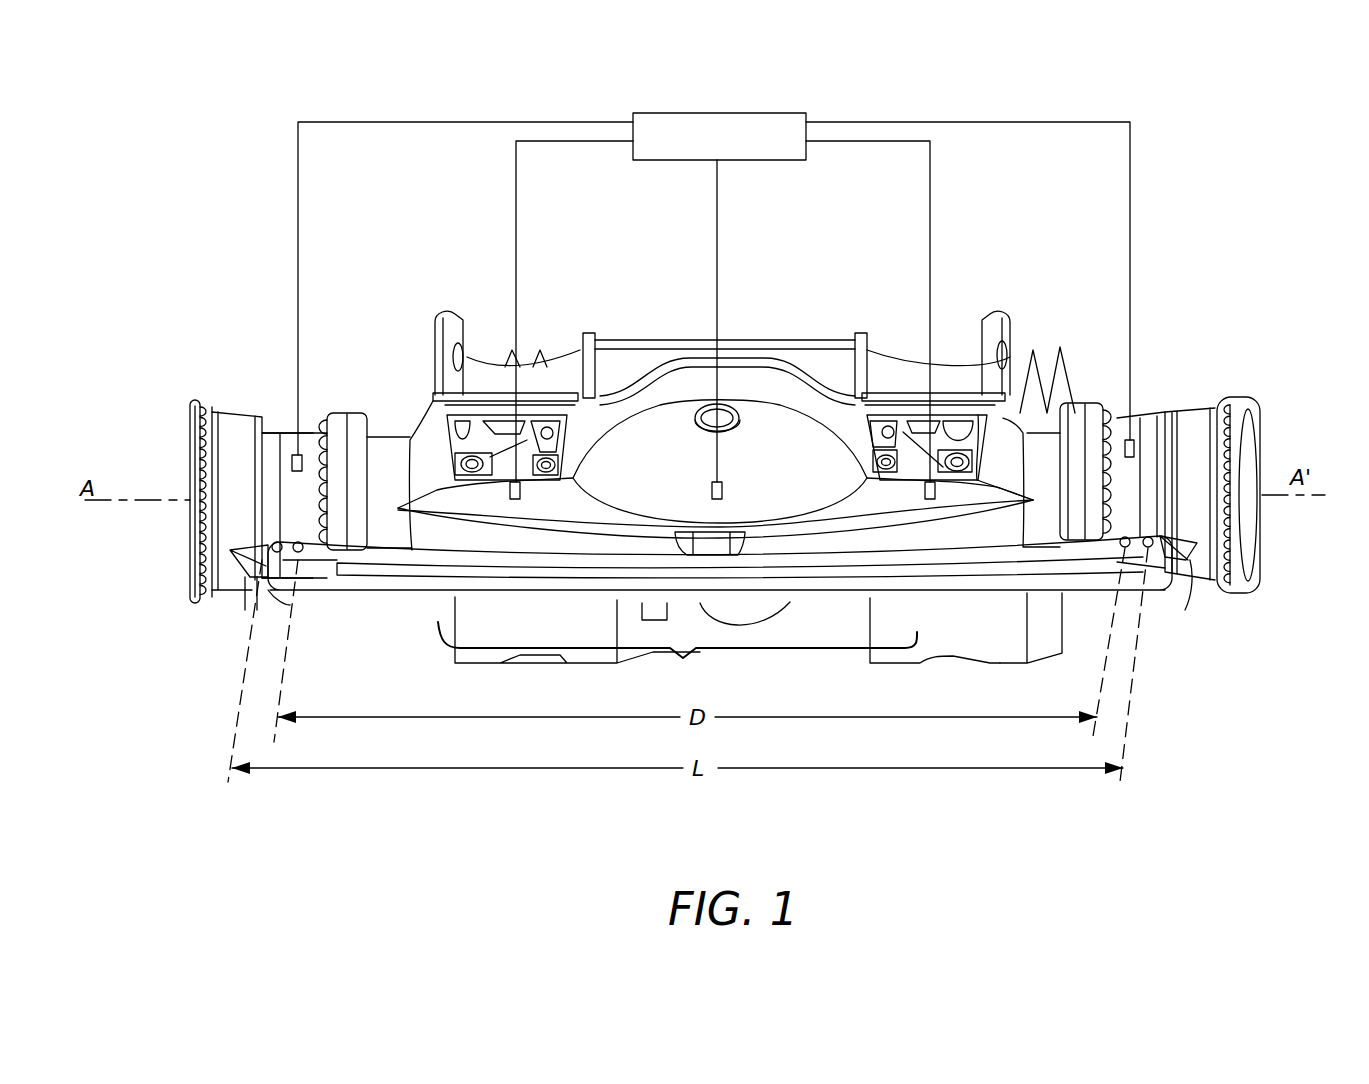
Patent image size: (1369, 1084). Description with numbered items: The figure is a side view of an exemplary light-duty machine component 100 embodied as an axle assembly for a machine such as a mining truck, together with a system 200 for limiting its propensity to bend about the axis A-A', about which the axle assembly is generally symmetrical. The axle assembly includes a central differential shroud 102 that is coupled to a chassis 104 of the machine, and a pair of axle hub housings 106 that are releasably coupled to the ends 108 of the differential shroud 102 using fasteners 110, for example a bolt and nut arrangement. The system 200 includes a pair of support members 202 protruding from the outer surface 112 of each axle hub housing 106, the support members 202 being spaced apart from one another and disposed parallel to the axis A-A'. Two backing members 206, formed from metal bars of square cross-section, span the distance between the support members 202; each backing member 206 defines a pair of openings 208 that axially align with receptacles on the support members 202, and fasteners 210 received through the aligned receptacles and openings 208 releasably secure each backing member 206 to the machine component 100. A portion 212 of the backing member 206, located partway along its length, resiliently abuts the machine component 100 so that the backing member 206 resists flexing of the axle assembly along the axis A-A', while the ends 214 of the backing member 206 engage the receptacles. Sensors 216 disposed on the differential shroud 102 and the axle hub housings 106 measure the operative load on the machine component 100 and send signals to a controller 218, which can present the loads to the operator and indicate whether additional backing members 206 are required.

The machine component 100 is at (1192, 151).
The system 200 is at (1142, 250).
The differential shroud 102 is at (657, 455).
The chassis 104 is at (1008, 465).
The axle hub housings 106 is at (262, 430).
The ends 108 is at (350, 414).
The fasteners 110 is at (327, 420).
The outer surface 112 is at (782, 445).
The support members 202 is at (258, 572).
The backing member 206 is at (418, 580).
The openings 208 is at (285, 577).
The fasteners 210 is at (276, 543).
The portion 212 is at (750, 644).
The ends 214 is at (257, 552).
The sensors 216 is at (297, 455).
The controller 218 is at (742, 150).